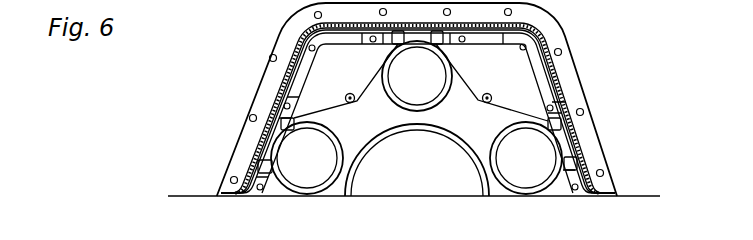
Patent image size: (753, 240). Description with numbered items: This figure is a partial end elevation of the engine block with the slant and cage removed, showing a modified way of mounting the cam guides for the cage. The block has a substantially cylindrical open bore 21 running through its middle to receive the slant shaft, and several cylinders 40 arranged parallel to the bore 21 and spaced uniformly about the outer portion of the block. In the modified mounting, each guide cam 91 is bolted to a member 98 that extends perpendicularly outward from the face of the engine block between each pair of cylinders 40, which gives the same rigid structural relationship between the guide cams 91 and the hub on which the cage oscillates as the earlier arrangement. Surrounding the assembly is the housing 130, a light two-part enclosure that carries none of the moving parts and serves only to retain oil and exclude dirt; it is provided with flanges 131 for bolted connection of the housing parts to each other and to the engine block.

The flange 131 is at (278, 38).
The housing 130 is at (277, 82).
The guide cam 91 is at (293, 117).
The member 98 is at (358, 84).
The cylinder 40 is at (441, 73).
The bore 21 is at (427, 185).